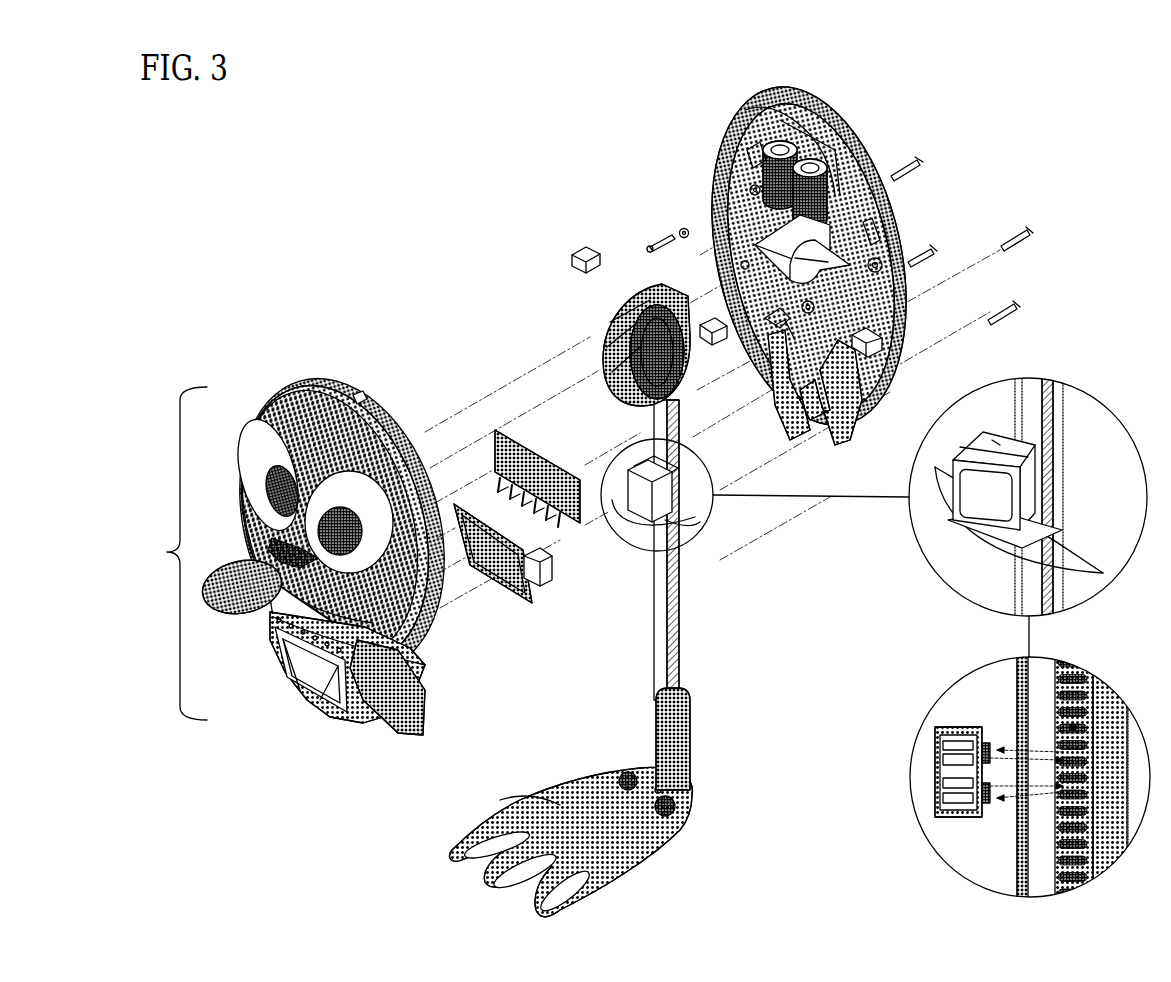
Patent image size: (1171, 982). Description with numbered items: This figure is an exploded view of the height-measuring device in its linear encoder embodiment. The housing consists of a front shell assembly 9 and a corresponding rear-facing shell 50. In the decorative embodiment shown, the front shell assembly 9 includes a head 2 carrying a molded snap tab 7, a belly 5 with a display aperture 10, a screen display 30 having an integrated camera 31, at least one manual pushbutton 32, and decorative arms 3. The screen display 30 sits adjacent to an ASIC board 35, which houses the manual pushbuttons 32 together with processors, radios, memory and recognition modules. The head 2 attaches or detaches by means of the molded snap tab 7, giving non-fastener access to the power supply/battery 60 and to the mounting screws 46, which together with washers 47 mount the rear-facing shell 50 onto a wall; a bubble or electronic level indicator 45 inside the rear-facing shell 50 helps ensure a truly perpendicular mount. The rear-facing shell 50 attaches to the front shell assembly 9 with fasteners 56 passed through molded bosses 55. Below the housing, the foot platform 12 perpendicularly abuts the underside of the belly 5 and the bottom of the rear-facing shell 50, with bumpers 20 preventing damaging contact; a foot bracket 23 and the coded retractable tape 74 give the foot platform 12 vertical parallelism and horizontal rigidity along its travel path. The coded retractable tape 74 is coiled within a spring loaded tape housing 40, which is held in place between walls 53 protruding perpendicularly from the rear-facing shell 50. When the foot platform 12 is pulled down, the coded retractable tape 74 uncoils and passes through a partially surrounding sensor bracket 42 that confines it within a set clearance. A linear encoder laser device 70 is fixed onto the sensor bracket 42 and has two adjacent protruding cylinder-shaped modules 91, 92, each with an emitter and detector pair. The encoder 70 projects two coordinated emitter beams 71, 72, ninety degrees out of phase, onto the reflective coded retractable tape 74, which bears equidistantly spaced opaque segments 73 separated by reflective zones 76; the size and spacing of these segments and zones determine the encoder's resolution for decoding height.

The head 2 is at (375, 457).
The decorative arms 3 is at (226, 570).
The belly 5 is at (370, 728).
The molded snap tab 7 is at (363, 393).
The front shell assembly 9 is at (175, 553).
The display aperture 10 is at (320, 700).
The foot platform 12 is at (548, 810).
The bumpers 20 is at (606, 775).
The foot bracket 23 is at (697, 725).
The screen display 30 is at (520, 590).
The integrated camera 31 is at (474, 575).
The manual pushbutton 32 is at (563, 525).
The ASIC board 35 is at (517, 433).
The spring loaded tape housing 40 is at (603, 352).
The sensor bracket 42 is at (705, 524).
The level indicator 45 is at (572, 255).
The mounting screws 46 is at (650, 245).
The washers 47 is at (684, 228).
The rear-facing shell 50 is at (838, 148).
The walls 53 is at (850, 270).
The molded bosses 55 is at (885, 345).
The fasteners 56 is at (1010, 305).
The power supply/battery 60 is at (745, 115).
The linear encoder laser device 70 is at (614, 458).
The first emitter beam 71 is at (1060, 453).
The second emitter beam 72 is at (1060, 482).
The opaque segments 73 is at (1068, 707).
The coded retractable tape 74 is at (688, 652).
The reflective zones 76 is at (1078, 727).
The first cylinder-shaped module 91 is at (988, 743).
The second cylinder-shaped module 92 is at (986, 803).